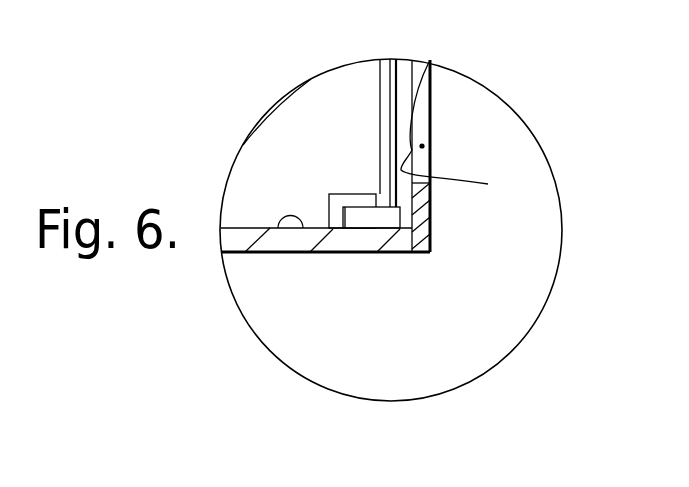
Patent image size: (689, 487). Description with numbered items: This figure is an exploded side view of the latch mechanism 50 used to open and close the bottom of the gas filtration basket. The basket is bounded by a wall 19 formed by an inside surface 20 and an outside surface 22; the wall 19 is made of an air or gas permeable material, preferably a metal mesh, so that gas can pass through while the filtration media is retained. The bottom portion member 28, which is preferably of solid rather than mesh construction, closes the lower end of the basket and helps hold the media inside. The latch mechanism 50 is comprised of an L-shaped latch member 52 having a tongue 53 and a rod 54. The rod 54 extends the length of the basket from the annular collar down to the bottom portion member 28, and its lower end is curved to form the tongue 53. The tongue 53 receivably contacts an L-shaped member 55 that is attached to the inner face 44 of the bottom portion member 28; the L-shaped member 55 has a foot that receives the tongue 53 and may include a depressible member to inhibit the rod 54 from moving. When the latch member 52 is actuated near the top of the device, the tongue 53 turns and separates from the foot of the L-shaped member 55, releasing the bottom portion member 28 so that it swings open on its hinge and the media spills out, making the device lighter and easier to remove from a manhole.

The latch mechanism 50 is at (354, 163).
The rod 54 is at (379, 73).
The outside surface 22 is at (431, 105).
The wall 19 is at (431, 132).
The inside surface 20 is at (459, 132).
The L-shaped member 55 is at (329, 206).
The L-shaped latch member 52 is at (386, 185).
The tongue 53 is at (363, 220).
The bottom portion member 28 is at (333, 243).
The inner face 44 is at (278, 253).